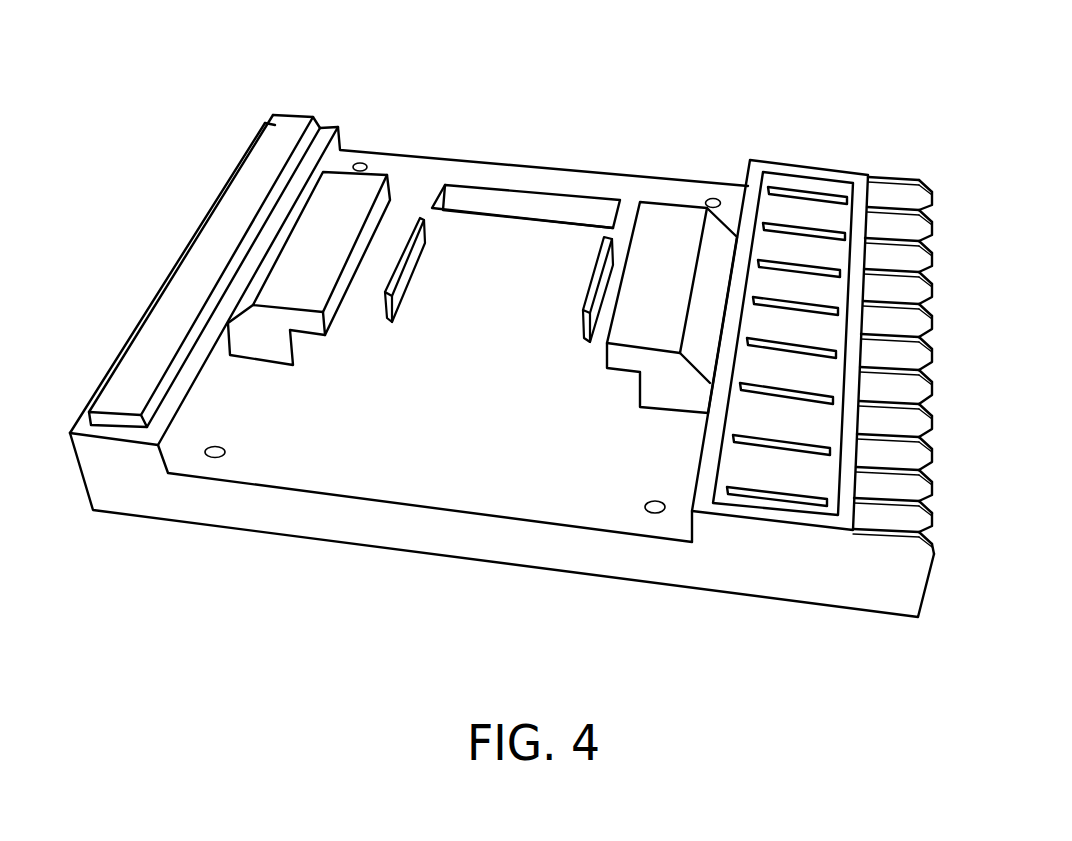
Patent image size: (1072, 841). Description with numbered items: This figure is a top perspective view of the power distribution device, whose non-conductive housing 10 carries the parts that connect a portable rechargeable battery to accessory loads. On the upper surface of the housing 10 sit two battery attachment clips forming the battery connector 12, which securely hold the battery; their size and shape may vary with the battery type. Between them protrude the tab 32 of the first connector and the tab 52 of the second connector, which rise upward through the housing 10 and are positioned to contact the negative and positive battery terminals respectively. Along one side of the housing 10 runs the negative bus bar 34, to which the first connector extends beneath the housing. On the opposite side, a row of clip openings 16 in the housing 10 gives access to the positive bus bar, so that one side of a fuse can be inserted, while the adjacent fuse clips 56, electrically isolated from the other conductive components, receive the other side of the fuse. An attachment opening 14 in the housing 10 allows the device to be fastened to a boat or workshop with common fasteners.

The housing 10 is at (452, 437).
The battery connector 12 is at (349, 207).
The attachment opening 14 is at (207, 452).
The clip opening 16 is at (805, 228).
The tab 32 is at (420, 213).
The negative bus bar 34 is at (188, 275).
The tab 52 is at (604, 232).
The fuse clip 56 is at (907, 322).